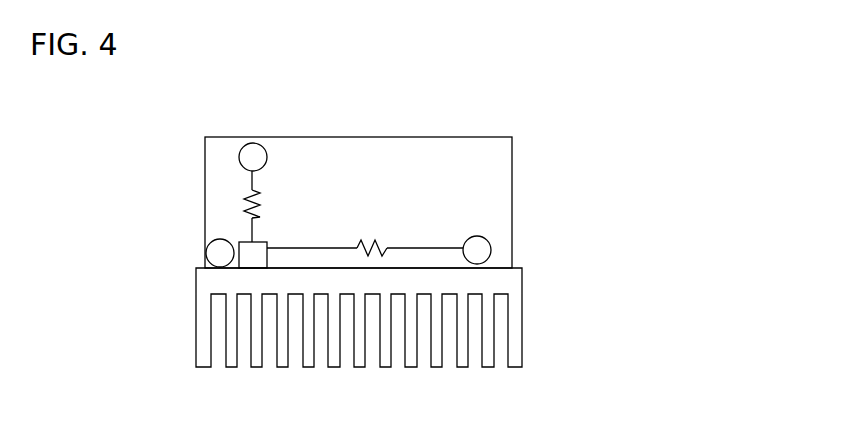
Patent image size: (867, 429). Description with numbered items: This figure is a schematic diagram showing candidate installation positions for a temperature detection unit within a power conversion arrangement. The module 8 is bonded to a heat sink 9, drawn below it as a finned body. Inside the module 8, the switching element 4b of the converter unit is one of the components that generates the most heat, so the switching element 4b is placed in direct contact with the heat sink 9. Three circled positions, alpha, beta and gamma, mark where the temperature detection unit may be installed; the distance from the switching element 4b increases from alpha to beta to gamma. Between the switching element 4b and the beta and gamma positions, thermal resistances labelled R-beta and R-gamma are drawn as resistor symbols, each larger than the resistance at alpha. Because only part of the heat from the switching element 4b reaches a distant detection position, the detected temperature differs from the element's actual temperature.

The module 8 is at (503, 162).
The heat sink 9 is at (514, 290).
The switching element 4b is at (265, 241).